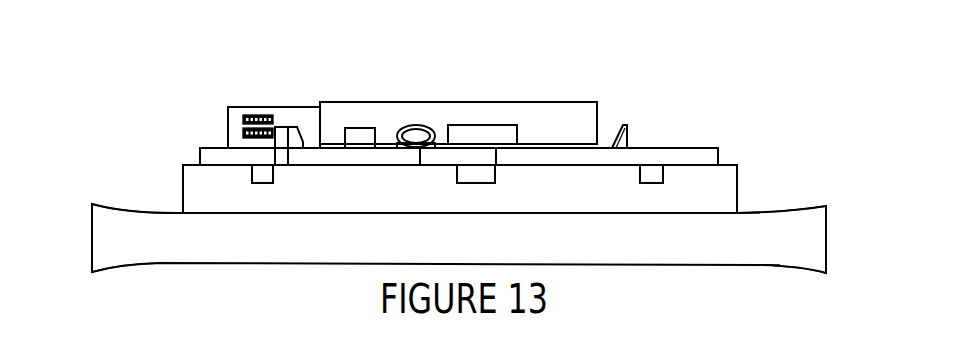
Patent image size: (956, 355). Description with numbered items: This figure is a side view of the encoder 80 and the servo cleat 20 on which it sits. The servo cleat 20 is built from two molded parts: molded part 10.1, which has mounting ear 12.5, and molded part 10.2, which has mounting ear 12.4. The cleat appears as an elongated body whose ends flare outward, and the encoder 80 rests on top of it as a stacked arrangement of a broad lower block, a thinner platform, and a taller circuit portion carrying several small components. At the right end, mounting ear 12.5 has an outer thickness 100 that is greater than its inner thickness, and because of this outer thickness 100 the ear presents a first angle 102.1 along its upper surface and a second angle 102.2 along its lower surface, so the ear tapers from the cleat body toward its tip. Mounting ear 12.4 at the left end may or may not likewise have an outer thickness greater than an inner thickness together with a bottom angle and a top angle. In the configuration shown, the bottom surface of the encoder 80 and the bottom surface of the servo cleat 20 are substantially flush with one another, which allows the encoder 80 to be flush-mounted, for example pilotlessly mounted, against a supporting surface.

The molded part 10.1 is at (826, 179).
The molded part 10.2 is at (76, 273).
The mounting ear 12.4 is at (143, 211).
The mounting ear 12.5 is at (826, 273).
The servo cleat 20 is at (68, 222).
The encoder 80 is at (330, 77).
The outer thickness 100 is at (842, 207).
The first angle 102.1 is at (762, 213).
The second angle 102.2 is at (764, 266).